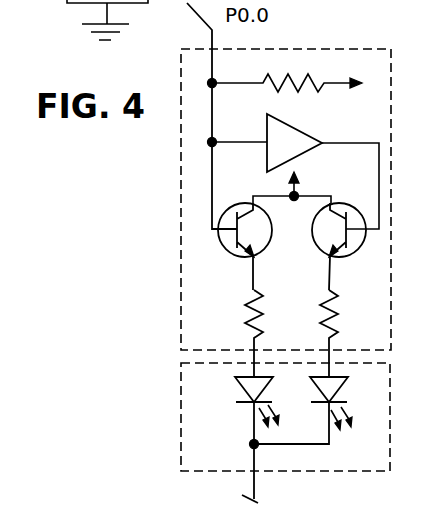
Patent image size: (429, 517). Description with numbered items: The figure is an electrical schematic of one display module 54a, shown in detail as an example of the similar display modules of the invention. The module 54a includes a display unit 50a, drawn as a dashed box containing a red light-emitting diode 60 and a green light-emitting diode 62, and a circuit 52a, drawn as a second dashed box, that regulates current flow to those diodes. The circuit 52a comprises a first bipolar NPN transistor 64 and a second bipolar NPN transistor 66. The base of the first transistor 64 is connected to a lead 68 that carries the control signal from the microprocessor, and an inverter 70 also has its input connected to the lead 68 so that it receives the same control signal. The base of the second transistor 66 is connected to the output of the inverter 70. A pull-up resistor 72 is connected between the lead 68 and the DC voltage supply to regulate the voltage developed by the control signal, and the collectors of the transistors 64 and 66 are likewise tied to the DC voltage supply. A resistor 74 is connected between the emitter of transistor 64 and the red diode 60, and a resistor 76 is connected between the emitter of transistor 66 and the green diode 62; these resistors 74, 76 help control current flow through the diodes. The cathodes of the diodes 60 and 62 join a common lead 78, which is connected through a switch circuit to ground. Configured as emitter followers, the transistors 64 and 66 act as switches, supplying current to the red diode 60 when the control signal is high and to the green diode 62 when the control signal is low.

The display unit 50a is at (179, 440).
The circuit 52a is at (182, 170).
The display module 54a is at (128, 218).
The red light-emitting diode 60 is at (236, 387).
The green light-emitting diode 62 is at (309, 392).
The first bipolar NPN transistor 64 is at (224, 251).
The second bipolar NPN transistor 66 is at (313, 245).
The lead 68 is at (212, 61).
The inverter 70 is at (298, 127).
The pull-up resistor 72 is at (290, 93).
The resistor 74 is at (258, 327).
The resistor 76 is at (337, 304).
The lead 78 is at (252, 457).